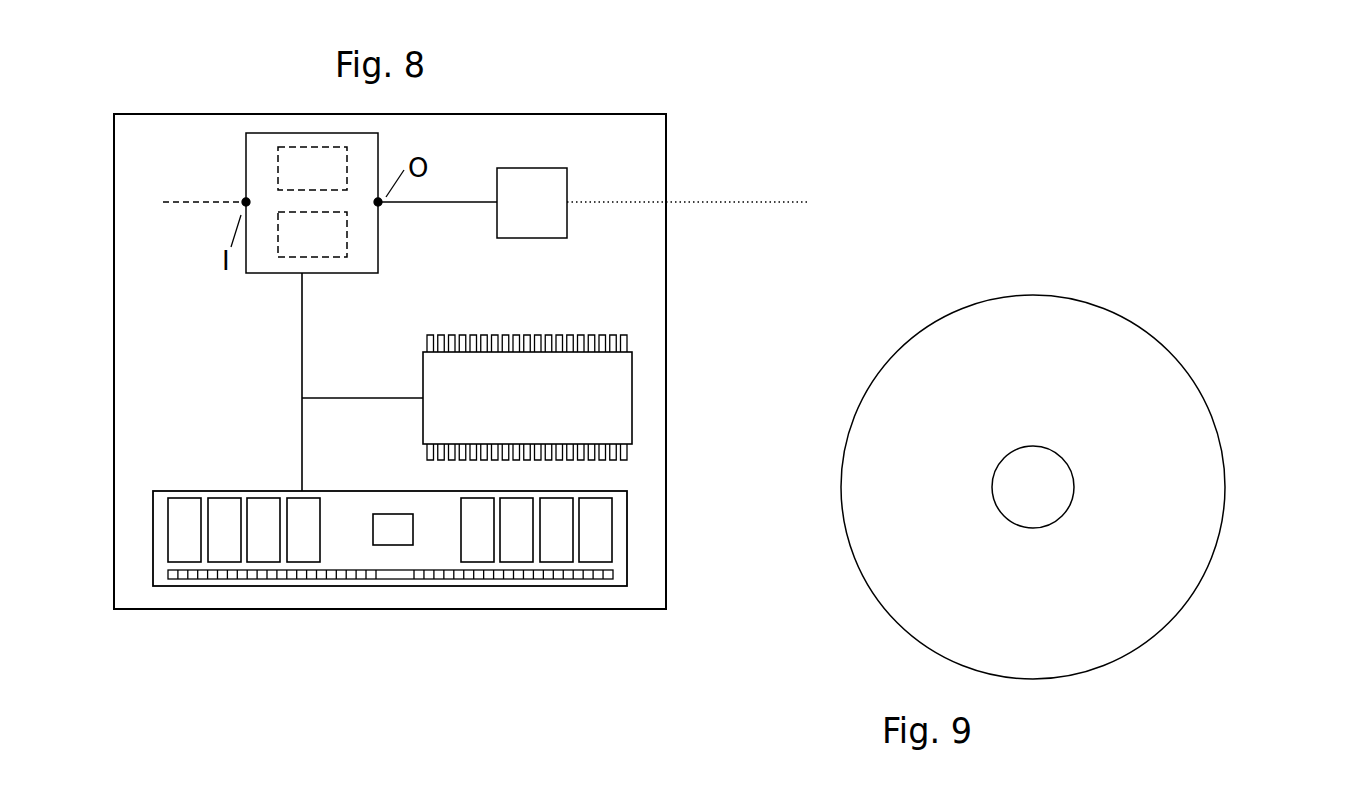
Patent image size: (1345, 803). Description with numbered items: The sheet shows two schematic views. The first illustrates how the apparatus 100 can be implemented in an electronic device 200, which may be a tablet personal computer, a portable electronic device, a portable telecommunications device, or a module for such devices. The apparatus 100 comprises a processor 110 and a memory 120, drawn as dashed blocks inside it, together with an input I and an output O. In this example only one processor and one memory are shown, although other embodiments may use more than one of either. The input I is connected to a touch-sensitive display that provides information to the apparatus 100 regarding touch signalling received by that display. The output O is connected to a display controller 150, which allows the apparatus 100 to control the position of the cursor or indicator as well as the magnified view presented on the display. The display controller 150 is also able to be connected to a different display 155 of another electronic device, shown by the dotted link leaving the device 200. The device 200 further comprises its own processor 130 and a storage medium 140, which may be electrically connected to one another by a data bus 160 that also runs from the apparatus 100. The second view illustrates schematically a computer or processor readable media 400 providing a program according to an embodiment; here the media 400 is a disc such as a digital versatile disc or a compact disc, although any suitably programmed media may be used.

In FIG. 8, the electronic device 200 is at (99, 170).
In FIG. 8, the apparatus 100 is at (264, 170).
In FIG. 8, the processor 110 is at (338, 182).
In FIG. 8, the memory 120 is at (338, 252).
In FIG. 8, the processor 130 is at (551, 413).
In FIG. 8, the storage medium 140 is at (598, 529).
In FIG. 8, the display controller 150 is at (532, 192).
In FIG. 8, the different display 155 is at (710, 193).
In FIG. 8, the data bus 160 is at (302, 345).
In FIG. 9, the computer/processor readable media 400 is at (1187, 369).